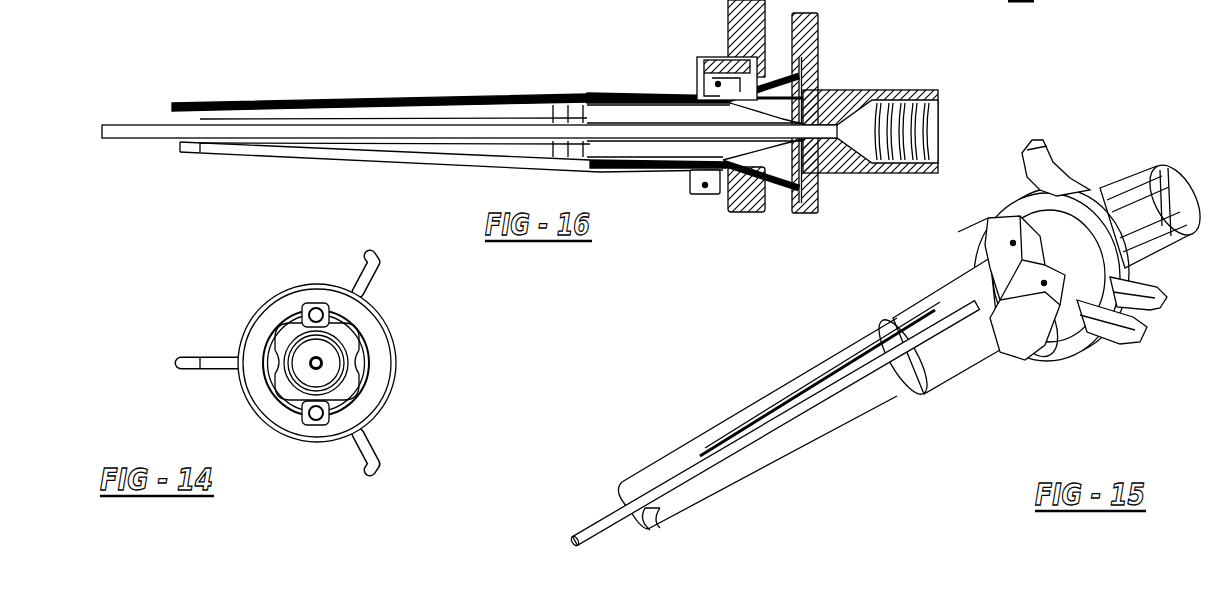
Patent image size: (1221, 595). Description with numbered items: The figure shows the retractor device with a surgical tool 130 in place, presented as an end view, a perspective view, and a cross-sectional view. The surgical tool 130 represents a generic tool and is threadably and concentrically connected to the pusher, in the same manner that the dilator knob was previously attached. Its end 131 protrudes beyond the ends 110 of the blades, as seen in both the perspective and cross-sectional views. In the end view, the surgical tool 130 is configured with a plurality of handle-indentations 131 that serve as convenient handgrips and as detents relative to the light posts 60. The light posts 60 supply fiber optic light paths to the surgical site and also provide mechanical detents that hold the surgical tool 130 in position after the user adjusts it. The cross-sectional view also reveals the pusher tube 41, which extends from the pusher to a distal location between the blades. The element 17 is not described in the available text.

In FIG. 16, the end of surgical tool 131 is at (123, 125).
In FIG. 14, the end of surgical tool 131 is at (289, 380).
In FIG. 15, the end of surgical tool 131 is at (606, 513).
In FIG. 16, the surgical tool 130 is at (884, 90).
In FIG. 14, the surgical tool 130 is at (299, 336).
In FIG. 15, the surgical tool 130 is at (1130, 175).
In FIG. 14, the light posts 60 is at (314, 303).
In FIG. 16, the pusher tube 41 is at (678, 162).
In FIG. 15, the tab 17 is at (1138, 337).
In FIG. 15, the ends of blades 110 is at (859, 311).